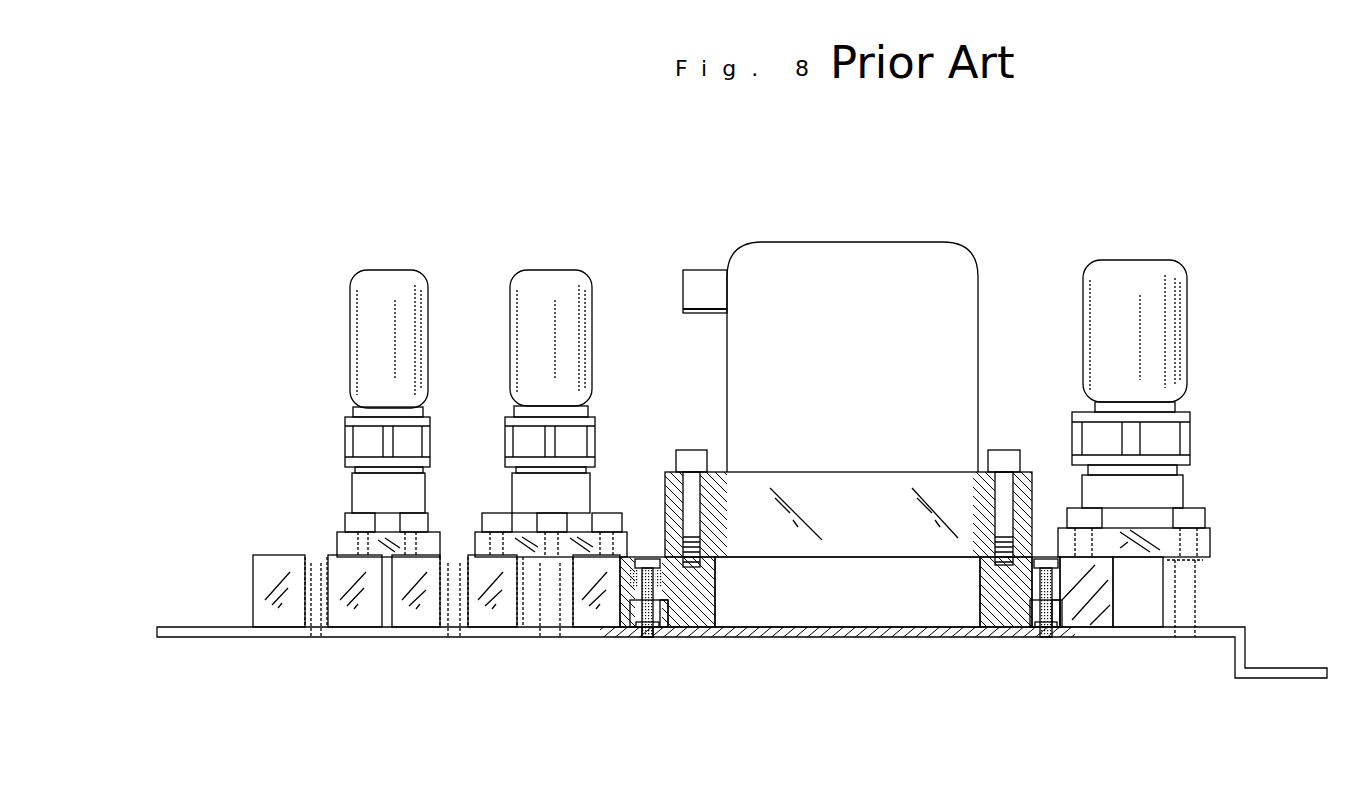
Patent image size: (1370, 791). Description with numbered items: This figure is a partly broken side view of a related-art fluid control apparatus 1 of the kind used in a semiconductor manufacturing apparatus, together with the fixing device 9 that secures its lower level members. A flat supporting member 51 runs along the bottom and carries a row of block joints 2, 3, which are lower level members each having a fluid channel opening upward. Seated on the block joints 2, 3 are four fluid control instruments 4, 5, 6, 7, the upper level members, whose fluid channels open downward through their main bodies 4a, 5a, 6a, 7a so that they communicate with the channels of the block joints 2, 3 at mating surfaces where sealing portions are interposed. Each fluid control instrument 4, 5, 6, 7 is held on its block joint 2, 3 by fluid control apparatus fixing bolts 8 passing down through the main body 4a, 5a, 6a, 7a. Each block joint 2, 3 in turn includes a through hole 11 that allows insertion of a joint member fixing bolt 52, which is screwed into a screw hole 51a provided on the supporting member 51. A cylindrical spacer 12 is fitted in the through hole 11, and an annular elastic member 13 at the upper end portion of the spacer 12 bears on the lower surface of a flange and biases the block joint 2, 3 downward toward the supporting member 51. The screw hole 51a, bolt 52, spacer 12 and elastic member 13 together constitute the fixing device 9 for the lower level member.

The fluid control apparatus 1 is at (1008, 252).
The block joint 2 is at (345, 618).
The block joint 3 is at (568, 618).
The fluid control instrument 4 is at (395, 272).
The main body 4a is at (342, 543).
The fluid control instrument 5 is at (535, 270).
The main body 5a is at (530, 530).
The fluid control instrument 6 is at (857, 242).
The main body 6a is at (667, 475).
The fluid control instrument 7 is at (1140, 260).
The main body 7a is at (1140, 528).
The fluid control apparatus fixing bolt 8 is at (348, 518).
The fixing device for a lower level member 9 is at (655, 625).
The through hole 11 is at (660, 594).
The cylindrical spacer 12 is at (658, 633).
The annular elastic member 13 is at (615, 612).
The supporting member 51 is at (497, 633).
The screw hole 51a is at (655, 640).
The joint member fixing bolt 52 is at (457, 560).